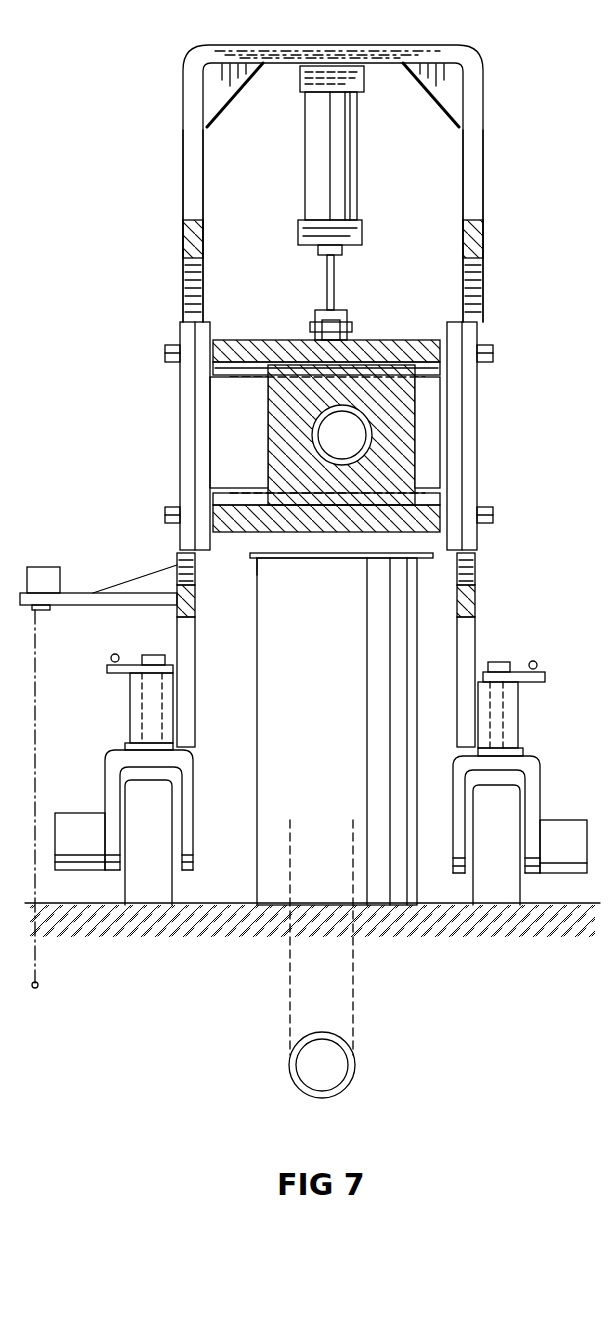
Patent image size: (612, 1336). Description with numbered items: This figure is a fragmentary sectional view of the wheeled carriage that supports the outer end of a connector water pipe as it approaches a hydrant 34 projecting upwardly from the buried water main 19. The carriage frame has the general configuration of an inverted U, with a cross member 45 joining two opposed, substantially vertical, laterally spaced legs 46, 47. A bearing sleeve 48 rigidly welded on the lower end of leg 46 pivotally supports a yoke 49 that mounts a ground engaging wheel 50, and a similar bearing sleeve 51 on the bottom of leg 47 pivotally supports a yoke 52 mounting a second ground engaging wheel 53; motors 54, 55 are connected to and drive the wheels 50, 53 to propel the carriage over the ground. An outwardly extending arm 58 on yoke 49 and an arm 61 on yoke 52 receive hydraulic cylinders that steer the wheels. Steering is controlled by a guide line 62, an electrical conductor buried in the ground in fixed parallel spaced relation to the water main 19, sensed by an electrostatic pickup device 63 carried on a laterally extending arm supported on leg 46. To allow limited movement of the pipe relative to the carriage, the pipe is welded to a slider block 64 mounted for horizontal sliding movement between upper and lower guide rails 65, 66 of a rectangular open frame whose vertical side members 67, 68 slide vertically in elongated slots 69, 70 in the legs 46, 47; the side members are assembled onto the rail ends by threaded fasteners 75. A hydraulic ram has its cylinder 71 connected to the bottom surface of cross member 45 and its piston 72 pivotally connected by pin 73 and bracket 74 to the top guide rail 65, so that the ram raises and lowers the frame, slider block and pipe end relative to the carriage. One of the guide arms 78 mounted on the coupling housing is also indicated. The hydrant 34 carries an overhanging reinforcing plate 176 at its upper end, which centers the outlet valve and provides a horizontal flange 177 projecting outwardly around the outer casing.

The cross member 45 is at (360, 50).
The leg 46 is at (190, 125).
The leg 47 is at (472, 185).
The elongated slot 69 is at (185, 285).
The elongated slot 70 is at (473, 305).
The cylinder 71 is at (350, 150).
The piston 72 is at (335, 278).
The pin 73 is at (348, 315).
The bracket 74 is at (320, 330).
The upper guide rail 65 is at (385, 345).
The slider block 64 is at (280, 425).
The lower guide rail 66 is at (322, 538).
The threaded fasteners 75 is at (165, 515).
The vertical side member 67 is at (185, 415).
The vertical side member 68 is at (475, 435).
The reinforcing plate 176 is at (270, 556).
The horizontal flange 177 is at (253, 570).
The hydrant 34 is at (257, 740).
The electrostatic pickup device 63 is at (45, 572).
The arm 78 is at (611, 545).
The guide line 62 is at (40, 982).
The arm 58 is at (107, 668).
The bearing sleeve 48 is at (130, 700).
The yoke 49 is at (105, 790).
The ground engaging wheel 50 is at (140, 906).
The motor 54 is at (92, 855).
The arm 61 is at (545, 675).
The bearing sleeve 51 is at (518, 720).
The yoke 52 is at (540, 770).
The ground engaging wheel 53 is at (480, 880).
The motor 55 is at (585, 840).
The water main 19 is at (350, 1096).